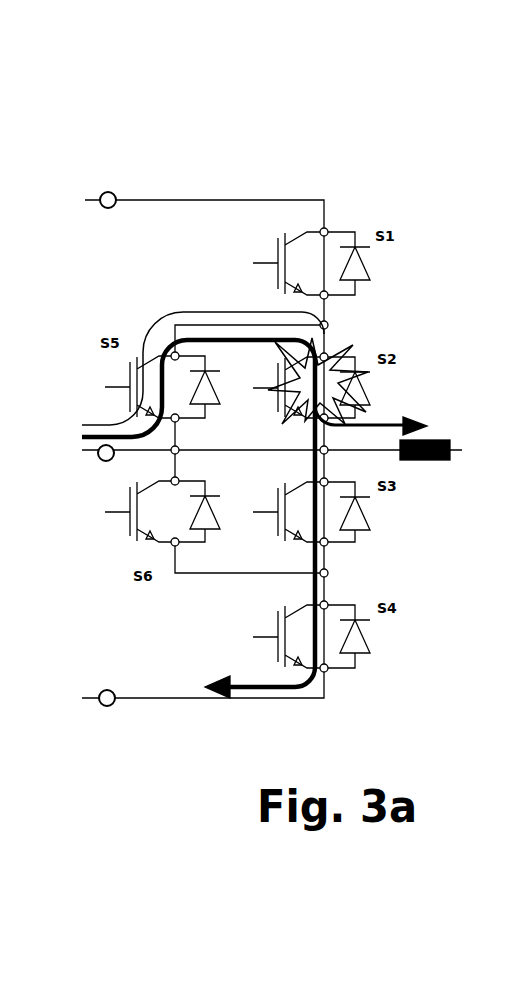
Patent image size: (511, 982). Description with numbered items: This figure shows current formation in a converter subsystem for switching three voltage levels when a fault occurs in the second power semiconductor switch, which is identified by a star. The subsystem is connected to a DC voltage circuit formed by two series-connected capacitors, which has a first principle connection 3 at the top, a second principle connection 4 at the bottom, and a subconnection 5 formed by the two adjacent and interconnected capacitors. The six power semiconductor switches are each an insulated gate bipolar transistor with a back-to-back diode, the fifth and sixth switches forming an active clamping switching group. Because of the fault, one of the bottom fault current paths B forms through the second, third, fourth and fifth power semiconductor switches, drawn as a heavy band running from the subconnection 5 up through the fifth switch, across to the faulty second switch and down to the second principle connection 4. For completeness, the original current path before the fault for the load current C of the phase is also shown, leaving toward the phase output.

The first principle connection 3 is at (112, 193).
The second principle connection 4 is at (107, 708).
The subconnection 5 is at (105, 437).
The bottom fault current path B is at (204, 338).
The load current C is at (398, 425).